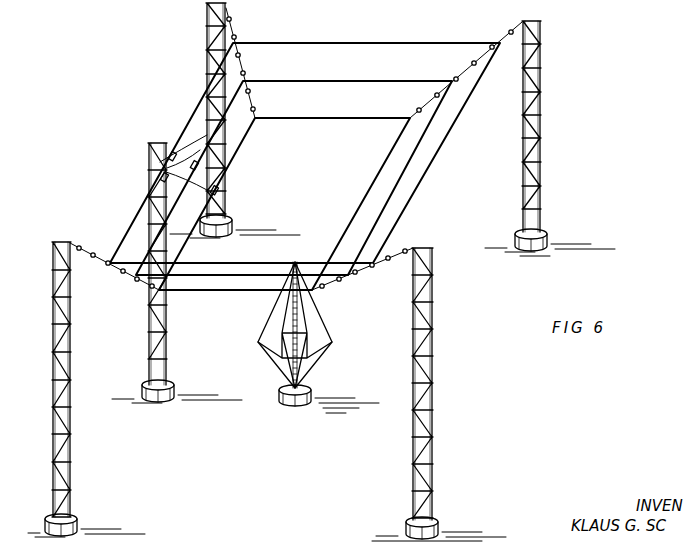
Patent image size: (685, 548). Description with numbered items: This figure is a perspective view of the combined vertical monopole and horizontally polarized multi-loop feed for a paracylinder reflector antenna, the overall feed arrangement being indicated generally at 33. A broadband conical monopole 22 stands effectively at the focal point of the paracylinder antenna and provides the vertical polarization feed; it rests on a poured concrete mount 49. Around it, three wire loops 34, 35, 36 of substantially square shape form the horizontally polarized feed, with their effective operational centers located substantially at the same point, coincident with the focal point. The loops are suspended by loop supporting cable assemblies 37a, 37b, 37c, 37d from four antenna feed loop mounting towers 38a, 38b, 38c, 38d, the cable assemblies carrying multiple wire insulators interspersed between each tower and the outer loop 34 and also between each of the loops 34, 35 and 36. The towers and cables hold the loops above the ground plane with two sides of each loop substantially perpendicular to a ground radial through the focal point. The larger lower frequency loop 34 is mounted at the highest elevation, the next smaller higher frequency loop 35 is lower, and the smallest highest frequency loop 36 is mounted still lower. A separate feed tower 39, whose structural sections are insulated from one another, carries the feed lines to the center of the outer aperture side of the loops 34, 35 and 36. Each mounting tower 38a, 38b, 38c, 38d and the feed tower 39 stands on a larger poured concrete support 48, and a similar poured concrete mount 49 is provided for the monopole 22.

The broadband conical monopole 22 is at (262, 373).
The frame support structure 33 is at (557, 98).
The wire loop 34 is at (360, 42).
The wire loop 35 is at (335, 80).
The wire loop 36 is at (325, 117).
The loop supporting cable assembly 37a is at (246, 64).
The loop supporting cable assembly 37b is at (468, 68).
The loop supporting cable assembly 37c is at (393, 260).
The loop supporting cable assembly 37d is at (92, 254).
The antenna feed loop mounting tower 38a is at (207, 31).
The antenna feed loop mounting tower 38b is at (541, 40).
The antenna feed loop mounting tower 38c is at (433, 298).
The antenna feed loop mounting tower 38d is at (72, 333).
The feed tower 39 is at (148, 144).
The poured concrete support 48 is at (230, 218).
The poured concrete mount 49 is at (288, 400).